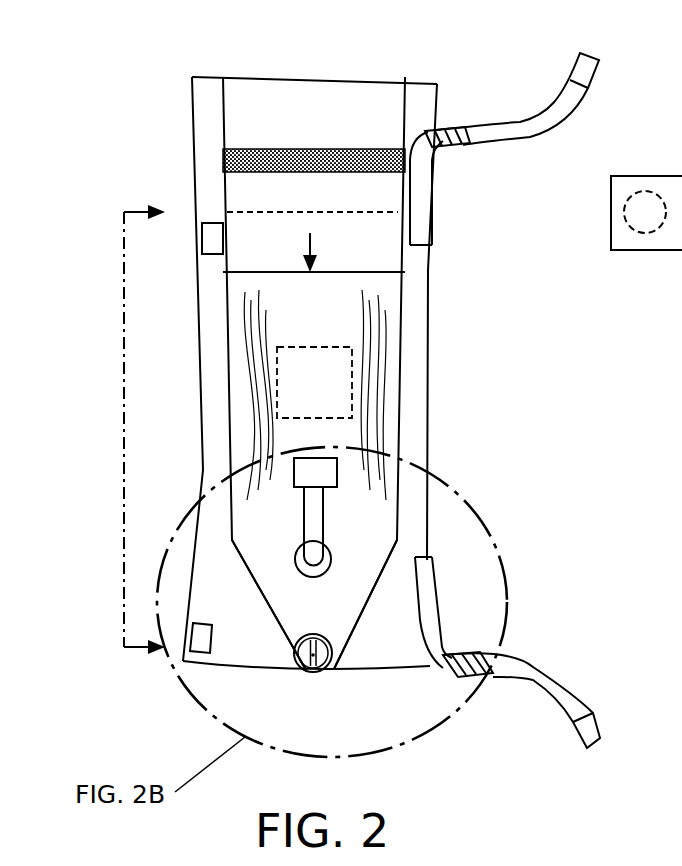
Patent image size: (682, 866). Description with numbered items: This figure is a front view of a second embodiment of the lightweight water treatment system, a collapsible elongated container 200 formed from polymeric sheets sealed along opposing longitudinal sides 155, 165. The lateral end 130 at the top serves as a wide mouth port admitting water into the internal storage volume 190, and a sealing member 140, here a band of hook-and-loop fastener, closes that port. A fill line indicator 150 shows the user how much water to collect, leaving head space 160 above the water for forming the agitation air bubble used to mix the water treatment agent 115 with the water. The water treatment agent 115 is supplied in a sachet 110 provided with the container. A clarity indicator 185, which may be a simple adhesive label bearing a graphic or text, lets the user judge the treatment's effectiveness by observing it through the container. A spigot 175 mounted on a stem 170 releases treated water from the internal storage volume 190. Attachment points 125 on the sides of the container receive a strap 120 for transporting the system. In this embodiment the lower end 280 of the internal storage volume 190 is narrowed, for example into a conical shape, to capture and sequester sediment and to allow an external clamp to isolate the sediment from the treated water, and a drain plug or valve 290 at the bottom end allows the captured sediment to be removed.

The collapsible elongated container 200 is at (150, 98).
The lateral end 130 is at (278, 78).
The strap 120 is at (520, 122).
The sealing member 140 is at (223, 167).
The attachment points 125 is at (210, 247).
The water treatment agent 115 is at (638, 210).
The sachet 110 is at (642, 250).
The head space 160 is at (373, 213).
The clarity indicator 185 is at (280, 368).
The longitudinal side 155 is at (218, 430).
The fill line indicator 150 is at (308, 272).
The longitudinal side 165 is at (413, 445).
The spigot 175 is at (310, 477).
The stem 170 is at (320, 533).
The drain plug or valve 290 is at (303, 670).
The lower end 280 is at (353, 632).
The internal storage volume 190 is at (124, 462).